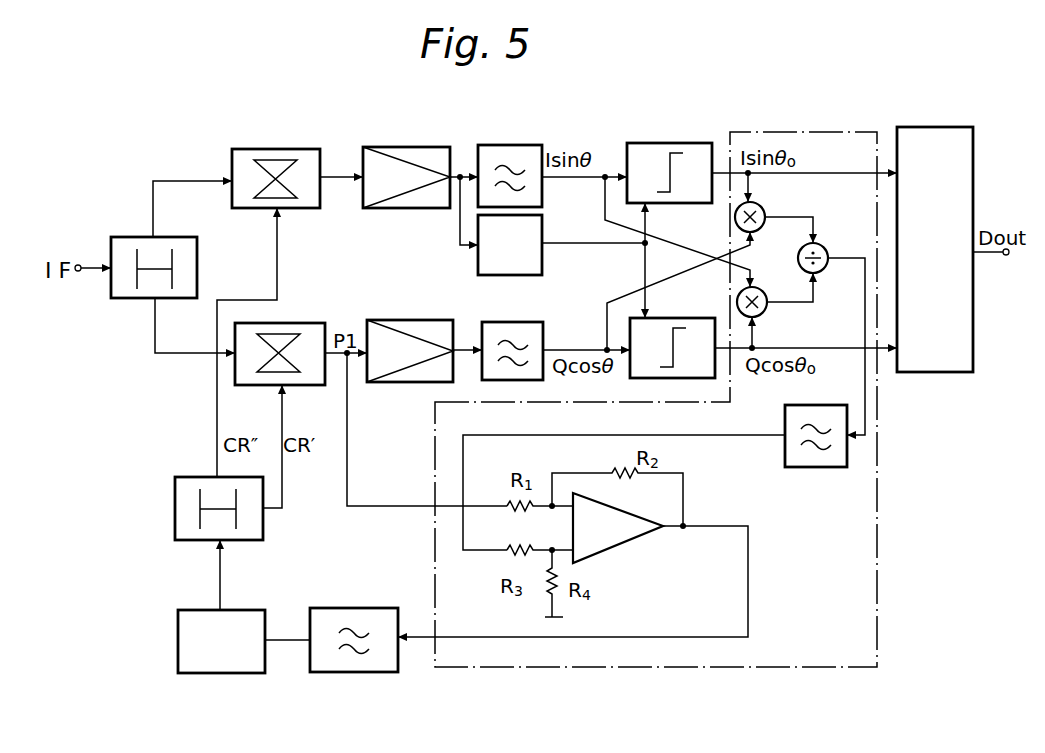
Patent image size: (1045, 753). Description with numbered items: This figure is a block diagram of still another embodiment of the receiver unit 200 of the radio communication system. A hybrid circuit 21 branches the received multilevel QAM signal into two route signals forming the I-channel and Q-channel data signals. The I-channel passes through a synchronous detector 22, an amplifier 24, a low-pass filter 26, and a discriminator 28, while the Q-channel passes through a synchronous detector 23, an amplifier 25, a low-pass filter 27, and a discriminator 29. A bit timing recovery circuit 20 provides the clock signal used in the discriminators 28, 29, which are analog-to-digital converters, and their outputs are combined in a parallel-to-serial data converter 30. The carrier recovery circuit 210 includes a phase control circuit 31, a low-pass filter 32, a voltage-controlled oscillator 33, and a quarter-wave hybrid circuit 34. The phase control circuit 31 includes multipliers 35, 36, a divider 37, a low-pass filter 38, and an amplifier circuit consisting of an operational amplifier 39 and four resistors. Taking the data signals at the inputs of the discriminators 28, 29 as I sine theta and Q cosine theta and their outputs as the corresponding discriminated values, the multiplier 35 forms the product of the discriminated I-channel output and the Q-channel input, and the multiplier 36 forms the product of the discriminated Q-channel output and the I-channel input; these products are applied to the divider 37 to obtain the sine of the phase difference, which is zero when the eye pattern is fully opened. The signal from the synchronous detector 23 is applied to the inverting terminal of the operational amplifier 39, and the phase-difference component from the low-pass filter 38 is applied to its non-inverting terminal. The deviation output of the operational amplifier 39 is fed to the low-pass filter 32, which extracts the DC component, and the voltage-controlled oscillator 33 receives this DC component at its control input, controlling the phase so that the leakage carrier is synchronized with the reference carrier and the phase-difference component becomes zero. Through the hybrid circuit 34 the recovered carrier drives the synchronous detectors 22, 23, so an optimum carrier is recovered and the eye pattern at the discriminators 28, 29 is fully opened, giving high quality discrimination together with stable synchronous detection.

The bit timing recovery circuit 20 is at (543, 232).
The hybrid circuit 21 is at (124, 237).
The synchronous detector 22 is at (296, 149).
The synchronous detector 23 is at (316, 323).
The amplifier 24 is at (425, 146).
The amplifier 25 is at (433, 317).
The low-pass filter 26 is at (515, 146).
The low-pass filter 27 is at (525, 317).
The discriminator 28 is at (682, 144).
The discriminator 29 is at (687, 321).
The parallel-to-serial data converter 30 is at (946, 121).
The phase control circuit 31 is at (879, 540).
The low-pass filter 32 is at (373, 601).
The voltage-controlled oscillator 33 is at (258, 603).
The π/2 hybrid circuit 34 is at (174, 516).
The multiplier 35 is at (765, 212).
The multiplier 36 is at (764, 311).
The divider 37 is at (826, 248).
The low-pass filter 38 is at (815, 467).
The operational amplifier 39 is at (632, 545).
The receiver unit 200 is at (150, 114).
The carrier recovery circuit 210 is at (143, 433).